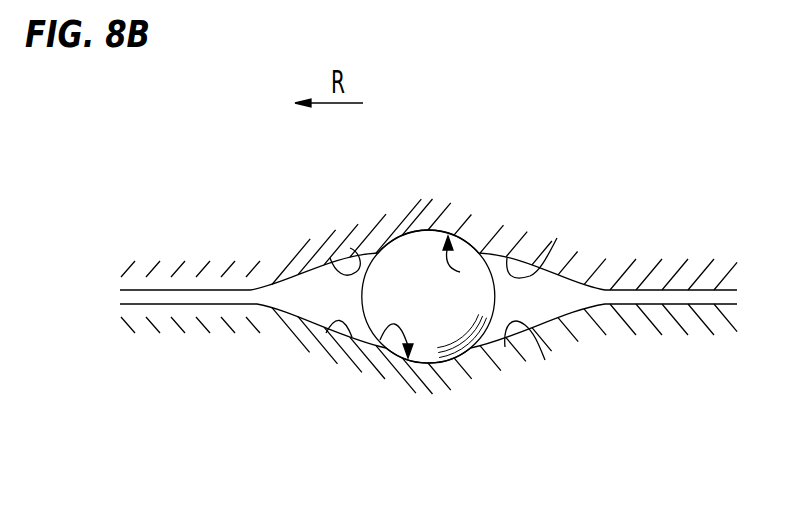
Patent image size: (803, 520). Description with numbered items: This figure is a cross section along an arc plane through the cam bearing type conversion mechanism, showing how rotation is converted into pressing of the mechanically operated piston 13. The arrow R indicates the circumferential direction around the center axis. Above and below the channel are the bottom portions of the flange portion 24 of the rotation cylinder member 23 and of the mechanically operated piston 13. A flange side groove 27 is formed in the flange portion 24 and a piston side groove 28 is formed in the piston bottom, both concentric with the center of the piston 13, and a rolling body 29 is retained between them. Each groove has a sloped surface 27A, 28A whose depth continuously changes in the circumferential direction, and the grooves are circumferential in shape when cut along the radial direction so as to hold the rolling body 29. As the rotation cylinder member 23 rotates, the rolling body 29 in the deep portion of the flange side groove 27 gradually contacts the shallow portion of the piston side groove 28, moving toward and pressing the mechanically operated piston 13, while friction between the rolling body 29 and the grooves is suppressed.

The mechanically operated piston 13 is at (647, 272).
The rotation cylinder member 23 is at (657, 312).
The flange portion 24 is at (429, 364).
The flange side groove 27 is at (380, 340).
The sloped surface of flange side groove 27A is at (328, 331).
The piston side groove 28 is at (472, 256).
The sloped surface of piston side groove 28A is at (322, 266).
The rolling body 29 is at (418, 270).